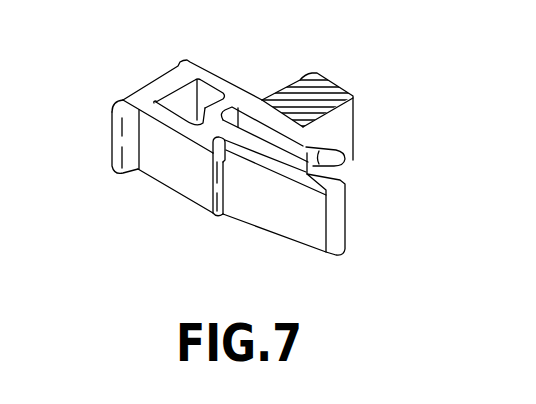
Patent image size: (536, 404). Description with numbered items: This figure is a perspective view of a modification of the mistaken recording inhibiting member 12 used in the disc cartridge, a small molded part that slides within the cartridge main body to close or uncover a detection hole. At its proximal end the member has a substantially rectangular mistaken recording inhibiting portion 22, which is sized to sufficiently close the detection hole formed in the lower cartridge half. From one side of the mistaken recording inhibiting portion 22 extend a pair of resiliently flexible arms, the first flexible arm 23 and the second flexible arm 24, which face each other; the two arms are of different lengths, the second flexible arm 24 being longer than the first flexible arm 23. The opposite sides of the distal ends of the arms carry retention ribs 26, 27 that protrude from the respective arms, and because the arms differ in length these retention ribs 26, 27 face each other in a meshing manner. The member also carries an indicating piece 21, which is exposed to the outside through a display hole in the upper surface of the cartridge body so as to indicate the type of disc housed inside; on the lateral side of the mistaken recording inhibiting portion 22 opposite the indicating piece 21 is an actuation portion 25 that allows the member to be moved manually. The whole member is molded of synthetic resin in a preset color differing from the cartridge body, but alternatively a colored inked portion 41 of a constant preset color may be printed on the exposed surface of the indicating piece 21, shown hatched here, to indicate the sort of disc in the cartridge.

The mistaken recording inhibiting member 12 is at (253, 141).
The indicating piece 21 is at (348, 85).
The mistaken recording inhibiting portion 22 is at (207, 69).
The first flexible arm 23 is at (335, 125).
The second flexible arm 24 is at (283, 167).
The actuation portion 25 is at (118, 175).
The retention rib 26 is at (322, 150).
The retention rib 27 is at (335, 180).
The colored inked portion 41 is at (332, 102).